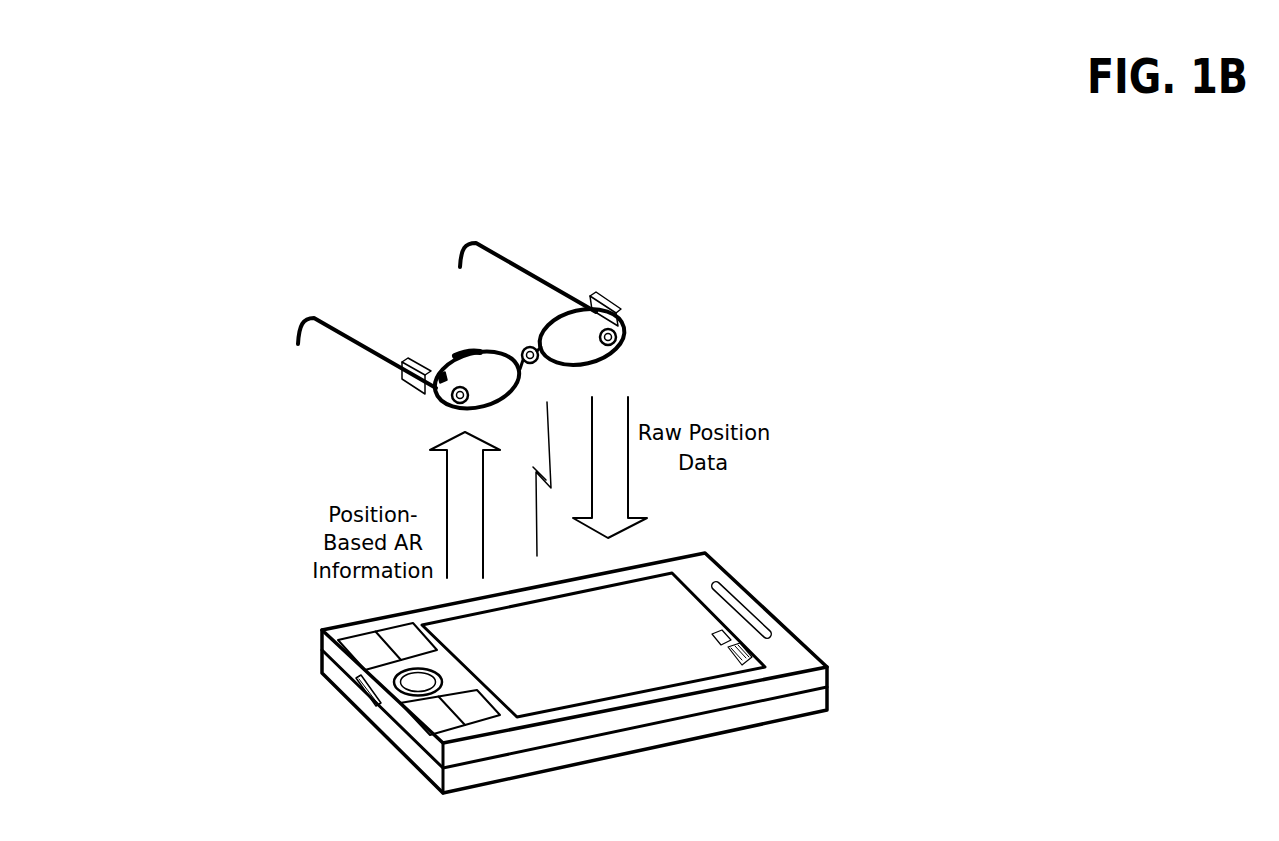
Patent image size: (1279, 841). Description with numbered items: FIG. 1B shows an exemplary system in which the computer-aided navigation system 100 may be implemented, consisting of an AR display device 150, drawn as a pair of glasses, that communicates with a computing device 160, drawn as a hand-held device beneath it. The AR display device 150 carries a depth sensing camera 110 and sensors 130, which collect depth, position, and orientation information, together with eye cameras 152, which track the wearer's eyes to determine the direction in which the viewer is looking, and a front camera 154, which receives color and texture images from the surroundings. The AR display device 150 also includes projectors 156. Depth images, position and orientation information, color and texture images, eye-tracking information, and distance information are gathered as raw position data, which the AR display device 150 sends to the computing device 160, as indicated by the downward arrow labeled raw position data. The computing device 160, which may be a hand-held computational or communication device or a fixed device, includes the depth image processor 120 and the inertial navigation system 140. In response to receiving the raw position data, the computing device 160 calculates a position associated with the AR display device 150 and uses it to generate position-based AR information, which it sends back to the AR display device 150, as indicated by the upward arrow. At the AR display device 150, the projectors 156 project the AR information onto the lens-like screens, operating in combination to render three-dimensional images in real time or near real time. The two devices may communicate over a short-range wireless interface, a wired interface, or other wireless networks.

The computer-aided navigation system 100 is at (150, 75).
The depth sensing camera 110 is at (447, 407).
The depth image processor 120 is at (342, 688).
The sensors 130 is at (407, 360).
The inertial navigation system 140 is at (393, 737).
The AR display device 150 is at (585, 250).
The eye camera 152 is at (467, 354).
The front camera 154 is at (527, 348).
The projector 156 is at (443, 373).
The computing device 160 is at (790, 590).